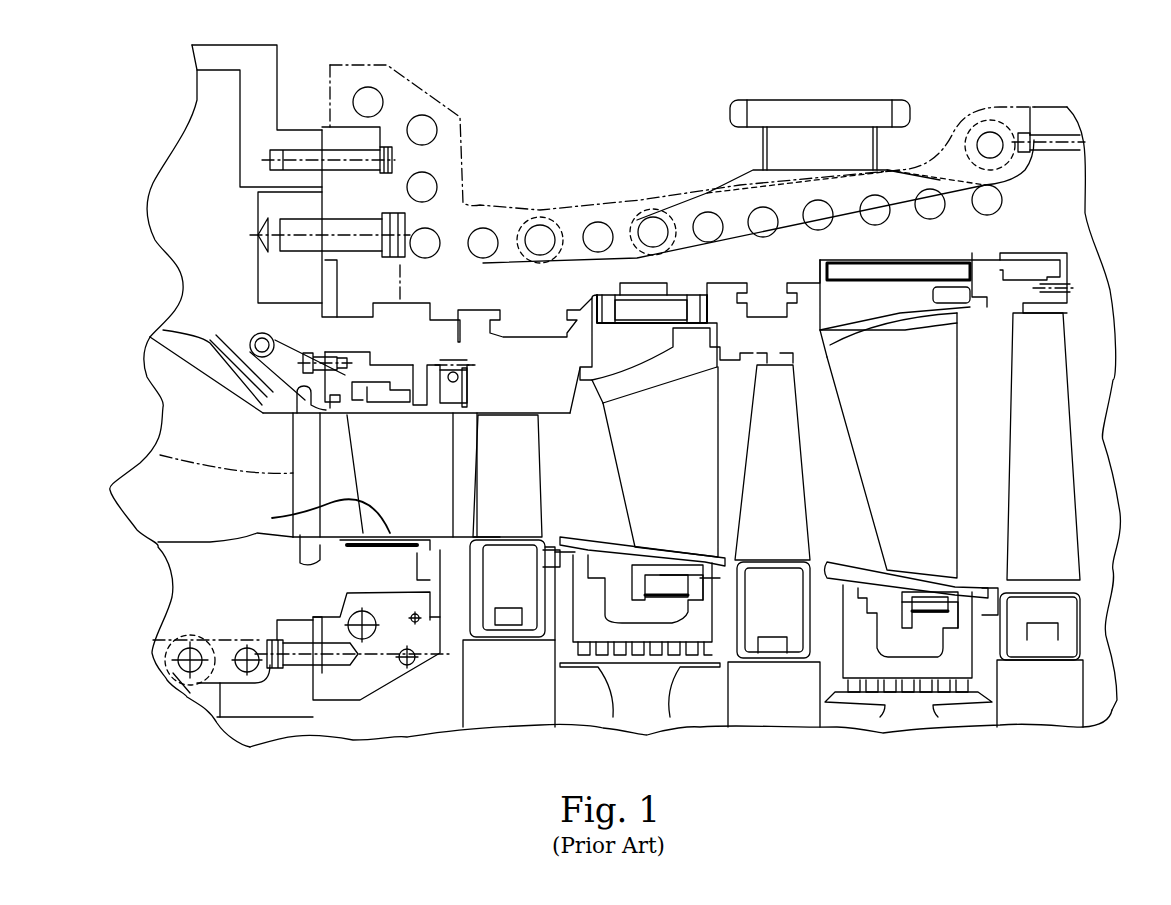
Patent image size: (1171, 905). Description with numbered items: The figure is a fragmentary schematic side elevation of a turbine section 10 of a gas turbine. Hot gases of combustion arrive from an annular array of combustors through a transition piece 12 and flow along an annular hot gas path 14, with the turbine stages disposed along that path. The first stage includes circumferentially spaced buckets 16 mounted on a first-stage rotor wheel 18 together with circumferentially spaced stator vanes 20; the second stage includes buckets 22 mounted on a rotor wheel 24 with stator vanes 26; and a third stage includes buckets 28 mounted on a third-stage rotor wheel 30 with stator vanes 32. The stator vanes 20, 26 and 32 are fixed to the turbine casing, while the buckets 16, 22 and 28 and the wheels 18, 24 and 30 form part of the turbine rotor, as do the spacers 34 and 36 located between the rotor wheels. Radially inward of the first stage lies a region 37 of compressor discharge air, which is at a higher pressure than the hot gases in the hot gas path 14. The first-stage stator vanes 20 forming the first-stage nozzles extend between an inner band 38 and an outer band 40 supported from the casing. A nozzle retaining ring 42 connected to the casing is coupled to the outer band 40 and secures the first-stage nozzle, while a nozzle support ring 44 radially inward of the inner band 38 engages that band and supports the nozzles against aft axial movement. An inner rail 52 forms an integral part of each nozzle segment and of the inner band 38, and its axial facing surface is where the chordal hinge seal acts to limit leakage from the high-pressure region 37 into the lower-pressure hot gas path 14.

The turbine section 10 is at (538, 140).
The transition piece 12 is at (173, 400).
The hot gas path 14 is at (572, 417).
The first-stage buckets 16 is at (535, 445).
The first-stage rotor wheel 18 is at (492, 708).
The first-stage stator vanes 20 is at (416, 458).
The second-stage buckets 22 is at (795, 455).
The second-stage rotor wheel 24 is at (775, 712).
The second-stage stator vanes 26 is at (661, 442).
The third-stage buckets 28 is at (1068, 447).
The third-stage rotor wheel 30 is at (1043, 720).
The third-stage stator vanes 32 is at (888, 445).
The spacer 34 is at (643, 712).
The spacer 36 is at (910, 720).
The compressor discharge air region 37 is at (228, 647).
The inner band 38 is at (316, 516).
The outer band 40 is at (415, 418).
The nozzle retaining ring 42 is at (355, 352).
The nozzle support ring 44 is at (443, 575).
The inner rail 52 is at (418, 552).